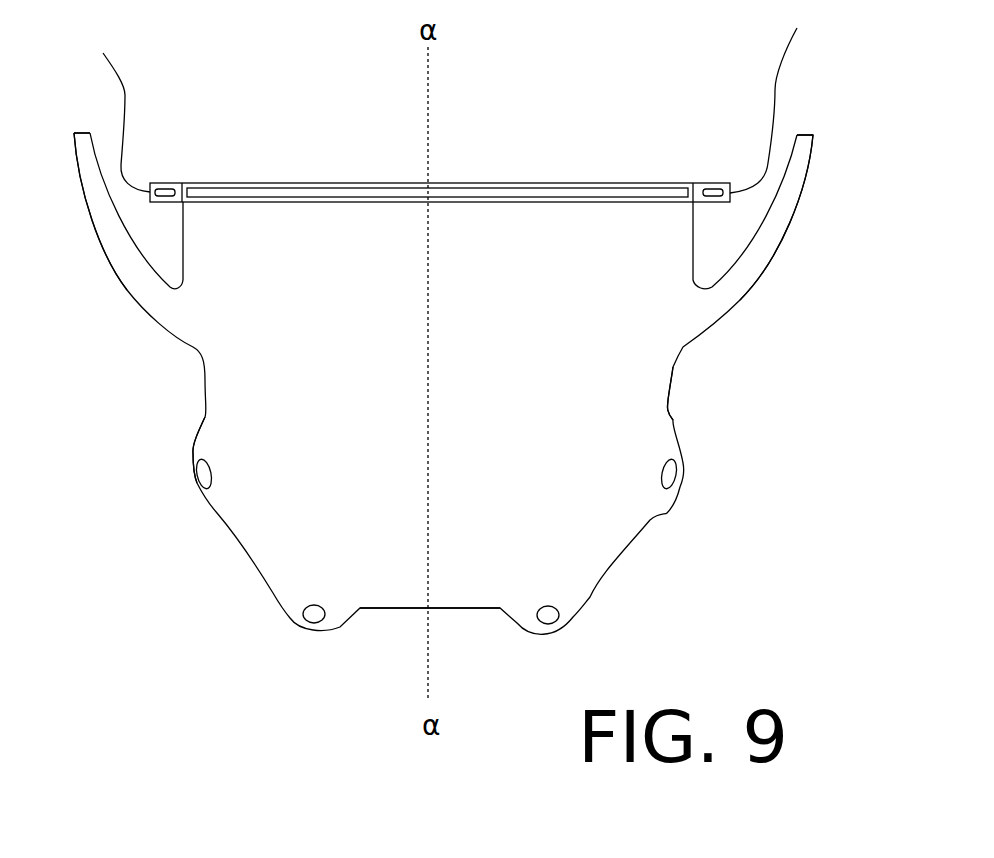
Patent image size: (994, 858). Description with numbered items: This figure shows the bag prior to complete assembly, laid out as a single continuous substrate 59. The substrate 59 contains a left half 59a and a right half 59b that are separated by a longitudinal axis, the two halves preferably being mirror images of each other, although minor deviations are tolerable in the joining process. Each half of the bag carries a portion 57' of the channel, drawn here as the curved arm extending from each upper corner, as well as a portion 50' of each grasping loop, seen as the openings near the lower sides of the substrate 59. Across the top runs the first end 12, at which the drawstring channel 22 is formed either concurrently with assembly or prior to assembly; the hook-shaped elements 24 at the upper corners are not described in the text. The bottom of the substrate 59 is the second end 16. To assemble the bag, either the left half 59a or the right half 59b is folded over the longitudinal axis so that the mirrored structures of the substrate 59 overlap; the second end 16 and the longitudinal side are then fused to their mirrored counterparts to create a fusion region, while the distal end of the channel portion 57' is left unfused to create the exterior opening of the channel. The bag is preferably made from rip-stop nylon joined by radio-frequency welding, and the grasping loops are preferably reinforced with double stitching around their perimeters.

The first end 12 is at (372, 178).
The drawstring channel 22 is at (530, 200).
The hook arm 24 is at (127, 117).
The portion of the channel 57' is at (428, 230).
The substrate 59 is at (479, 394).
The left half 59a is at (277, 398).
The right half 59b is at (568, 447).
The portion of the grasping loop 50' is at (439, 541).
The second end 16 is at (410, 617).